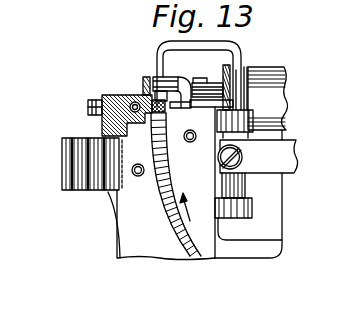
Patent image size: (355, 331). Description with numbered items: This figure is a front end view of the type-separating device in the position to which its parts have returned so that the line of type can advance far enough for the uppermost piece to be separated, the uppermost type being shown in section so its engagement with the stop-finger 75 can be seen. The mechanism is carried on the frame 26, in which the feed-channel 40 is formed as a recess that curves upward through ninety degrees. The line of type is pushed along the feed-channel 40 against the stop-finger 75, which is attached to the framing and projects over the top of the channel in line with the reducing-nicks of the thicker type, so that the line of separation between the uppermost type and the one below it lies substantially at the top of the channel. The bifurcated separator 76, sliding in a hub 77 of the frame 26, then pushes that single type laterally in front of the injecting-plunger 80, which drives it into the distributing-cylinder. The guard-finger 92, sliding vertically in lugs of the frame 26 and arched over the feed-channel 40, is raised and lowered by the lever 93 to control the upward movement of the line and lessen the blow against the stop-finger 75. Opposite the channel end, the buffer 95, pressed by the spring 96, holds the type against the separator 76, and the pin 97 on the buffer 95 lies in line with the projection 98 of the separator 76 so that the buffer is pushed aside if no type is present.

The frame 26 is at (176, 184).
The feed-channel 40 is at (161, 183).
The stop-finger 75 is at (173, 106).
The separator 76 is at (213, 86).
The hub 77 is at (272, 96).
The injecting-plunger 80 is at (147, 114).
The guard-finger 92 is at (237, 58).
The lever 93 is at (256, 184).
The buffer 95 is at (92, 99).
The spring 96 is at (98, 138).
The pin 97 is at (143, 81).
The projection 98 is at (158, 77).